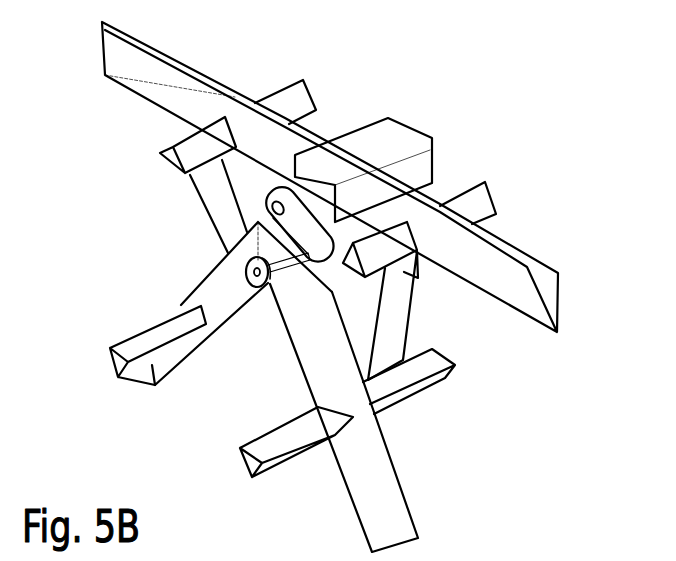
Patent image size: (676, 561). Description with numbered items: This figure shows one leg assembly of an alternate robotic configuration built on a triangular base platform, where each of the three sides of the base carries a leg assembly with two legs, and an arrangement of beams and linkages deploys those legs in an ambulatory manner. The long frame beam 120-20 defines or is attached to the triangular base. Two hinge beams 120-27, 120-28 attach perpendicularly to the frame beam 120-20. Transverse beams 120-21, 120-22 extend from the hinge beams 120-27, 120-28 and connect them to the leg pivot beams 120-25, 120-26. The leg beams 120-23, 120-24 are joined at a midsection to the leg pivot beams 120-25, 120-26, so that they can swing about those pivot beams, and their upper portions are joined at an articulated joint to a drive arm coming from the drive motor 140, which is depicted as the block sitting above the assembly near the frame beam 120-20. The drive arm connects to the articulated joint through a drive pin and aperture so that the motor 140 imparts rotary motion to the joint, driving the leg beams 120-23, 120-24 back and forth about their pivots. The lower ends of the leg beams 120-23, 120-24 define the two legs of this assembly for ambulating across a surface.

The frame beam 120-20 is at (540, 262).
The transverse beam 120-21 is at (405, 305).
The transverse beam 120-22 is at (215, 183).
The leg beam 120-23 is at (383, 482).
The leg beam 120-24 is at (178, 386).
The leg pivot beam 120-25 is at (432, 385).
The leg pivot beam 120-26 is at (130, 350).
The hinge beam 120-27 is at (487, 198).
The hinge beam 120-28 is at (280, 90).
The drive motor 140 is at (397, 130).